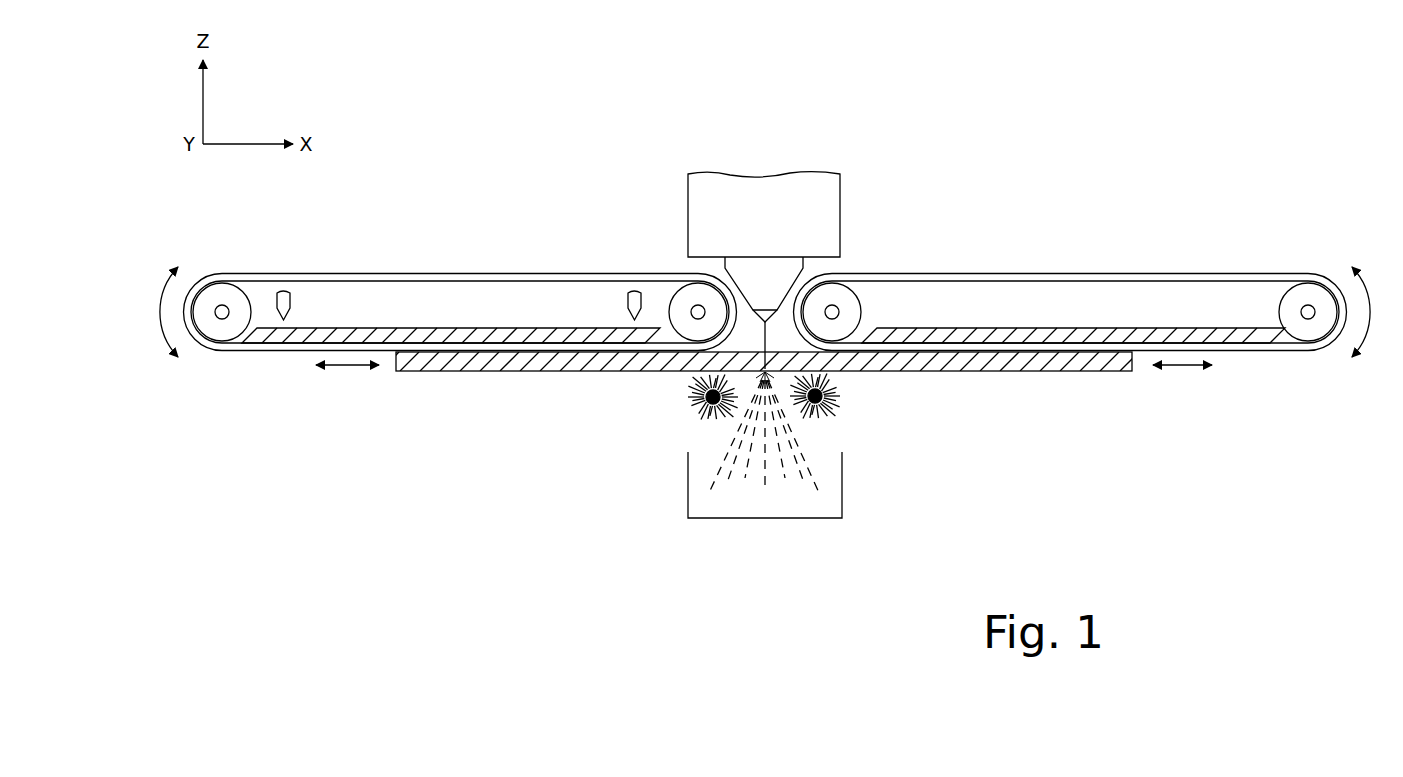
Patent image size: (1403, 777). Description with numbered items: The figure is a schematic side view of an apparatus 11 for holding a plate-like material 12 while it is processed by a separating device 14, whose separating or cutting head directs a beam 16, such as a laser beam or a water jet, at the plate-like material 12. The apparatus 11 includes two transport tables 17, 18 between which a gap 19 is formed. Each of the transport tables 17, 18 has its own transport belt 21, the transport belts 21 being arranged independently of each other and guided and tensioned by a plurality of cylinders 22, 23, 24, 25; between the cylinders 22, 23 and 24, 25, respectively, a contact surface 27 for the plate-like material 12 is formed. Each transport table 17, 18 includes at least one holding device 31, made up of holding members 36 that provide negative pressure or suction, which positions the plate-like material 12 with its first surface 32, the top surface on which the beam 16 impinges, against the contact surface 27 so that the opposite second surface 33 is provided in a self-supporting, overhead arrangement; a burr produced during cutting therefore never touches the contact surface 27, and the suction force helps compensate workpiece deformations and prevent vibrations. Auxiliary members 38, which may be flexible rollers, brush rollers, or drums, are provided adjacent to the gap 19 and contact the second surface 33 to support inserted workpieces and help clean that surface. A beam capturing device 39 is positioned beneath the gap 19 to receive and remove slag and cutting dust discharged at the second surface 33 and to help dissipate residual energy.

The apparatus 11 is at (1132, 205).
The plate-like material 12 is at (405, 362).
The separating device 14 is at (783, 205).
The beam 16 is at (762, 337).
The transport table 17 is at (502, 228).
The transport table 18 is at (1027, 228).
The gap 19 is at (742, 295).
The transport belt 21 is at (338, 275).
The cylinder 22 is at (682, 298).
The cylinder 23 is at (218, 295).
The cylinder 24 is at (845, 298).
The cylinder 25 is at (1313, 295).
The contact surface 27 is at (305, 345).
The holding device 31 is at (1299, 359).
The first surface 32 is at (793, 323).
The second surface 33 is at (528, 370).
The holding member 36 is at (1258, 337).
The auxiliary member 38 is at (692, 403).
The beam capturing device 39 is at (842, 493).